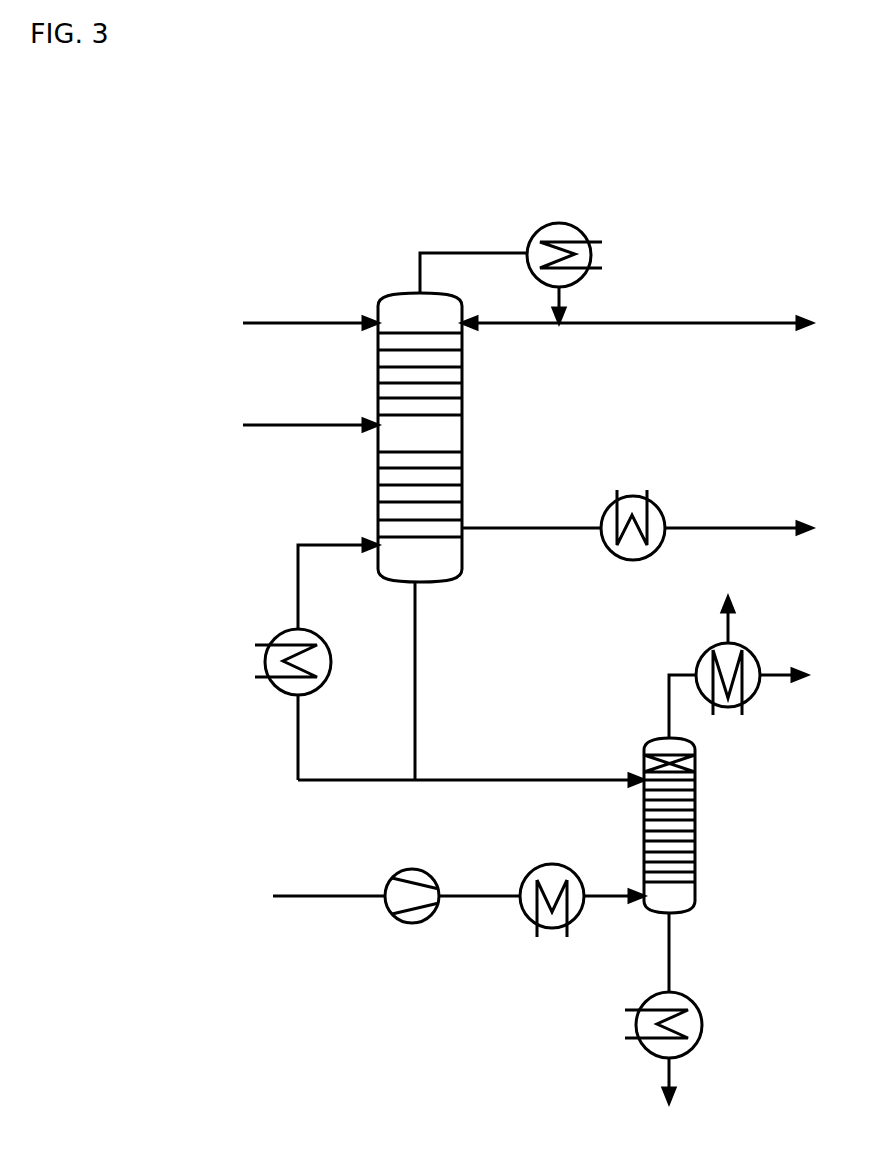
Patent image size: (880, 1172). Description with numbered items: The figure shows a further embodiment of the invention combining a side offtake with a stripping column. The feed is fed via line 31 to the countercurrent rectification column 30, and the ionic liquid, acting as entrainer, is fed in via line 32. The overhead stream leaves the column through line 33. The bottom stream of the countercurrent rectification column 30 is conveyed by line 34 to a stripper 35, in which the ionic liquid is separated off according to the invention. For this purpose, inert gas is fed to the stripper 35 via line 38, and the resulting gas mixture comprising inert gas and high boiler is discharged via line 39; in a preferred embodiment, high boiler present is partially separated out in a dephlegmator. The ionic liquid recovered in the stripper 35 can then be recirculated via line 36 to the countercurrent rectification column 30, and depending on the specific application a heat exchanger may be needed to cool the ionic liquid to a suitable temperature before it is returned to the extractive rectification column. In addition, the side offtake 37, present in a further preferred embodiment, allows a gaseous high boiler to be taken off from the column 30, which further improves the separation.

The countercurrent rectification column 30 is at (462, 358).
The feed line 31 is at (310, 411).
The entrainer feed line 32 is at (310, 310).
The overhead stream line 33 is at (637, 308).
The bottom stream line 34 is at (471, 765).
The stripper 35 is at (695, 783).
The ionic liquid recirculation line 36 is at (671, 1008).
The side offtake 37 is at (637, 523).
The inert gas line 38 is at (458, 899).
The gas mixture discharge line 39 is at (738, 666).